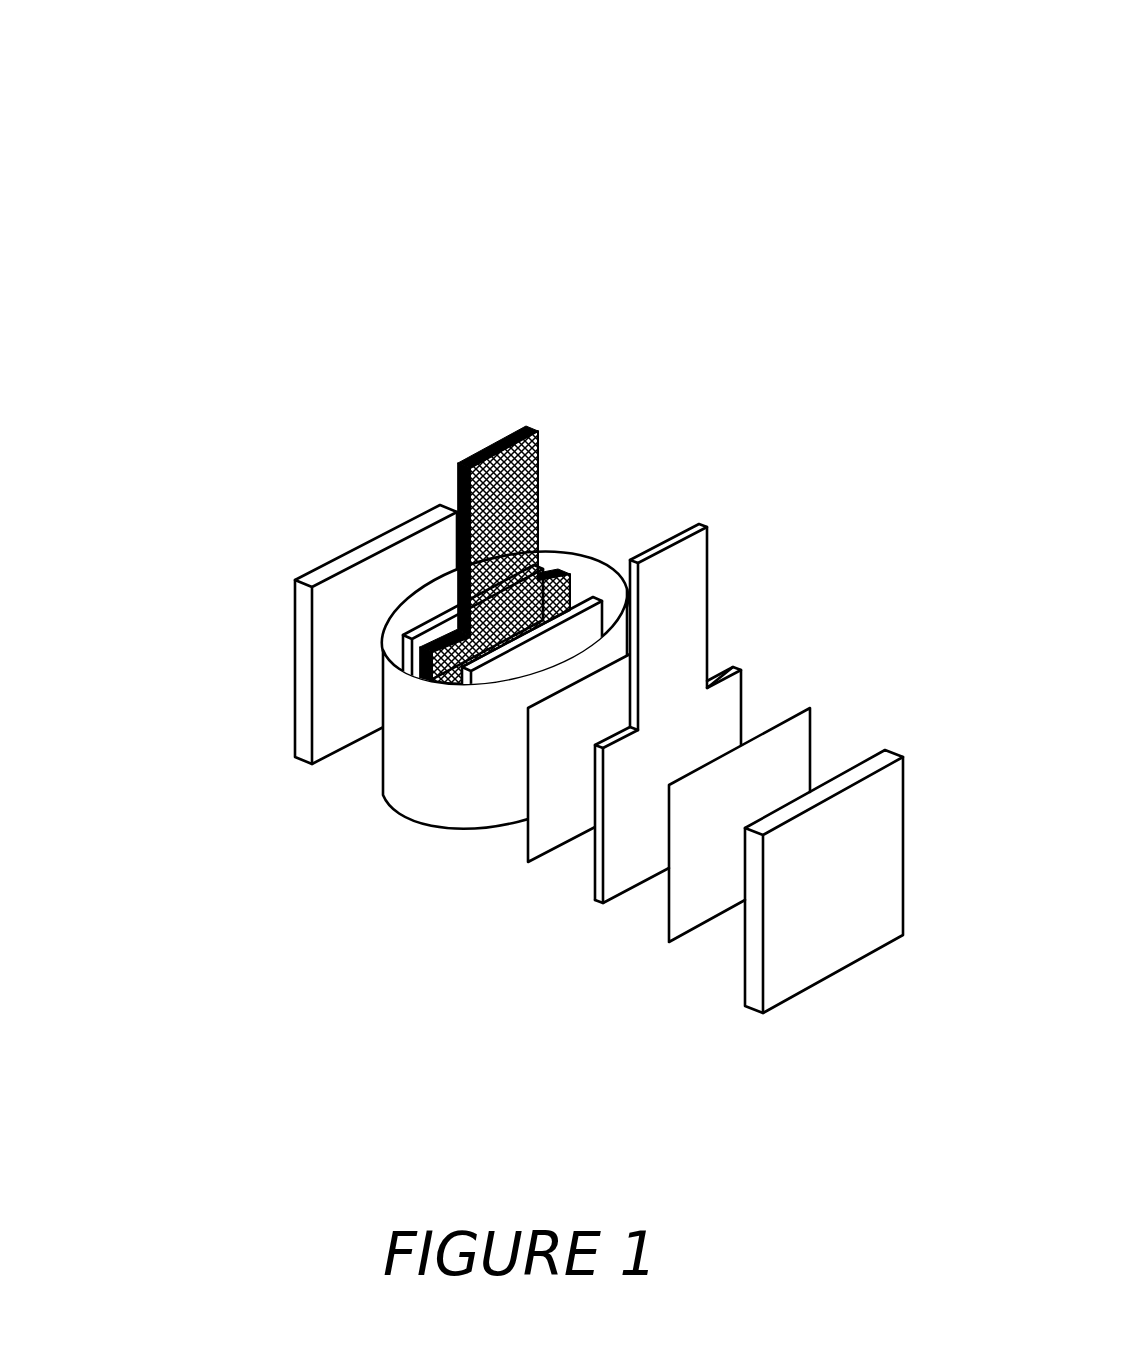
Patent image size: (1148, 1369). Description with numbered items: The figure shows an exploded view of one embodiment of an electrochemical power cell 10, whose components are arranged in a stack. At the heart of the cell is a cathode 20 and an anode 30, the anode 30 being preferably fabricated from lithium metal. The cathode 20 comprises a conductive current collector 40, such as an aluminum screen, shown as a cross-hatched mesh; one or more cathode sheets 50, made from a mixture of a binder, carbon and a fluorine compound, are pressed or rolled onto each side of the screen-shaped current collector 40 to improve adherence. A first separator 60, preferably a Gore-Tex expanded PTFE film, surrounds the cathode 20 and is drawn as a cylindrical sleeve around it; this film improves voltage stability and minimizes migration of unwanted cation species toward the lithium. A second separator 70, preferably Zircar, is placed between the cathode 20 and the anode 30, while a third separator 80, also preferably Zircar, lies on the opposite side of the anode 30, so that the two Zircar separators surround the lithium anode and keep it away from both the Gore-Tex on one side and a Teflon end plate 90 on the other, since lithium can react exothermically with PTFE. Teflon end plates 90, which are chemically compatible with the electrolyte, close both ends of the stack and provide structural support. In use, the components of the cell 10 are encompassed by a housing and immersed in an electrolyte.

The electrochemical power cell 10 is at (505, 120).
The cathode 20 is at (587, 577).
The anode 30 is at (627, 900).
The conductive current collector 40 is at (507, 417).
The cathode sheet 50 is at (422, 613).
The first separator 60 is at (380, 718).
The second separator 70 is at (527, 740).
The third separator 80 is at (812, 702).
The end plate 90 is at (410, 518).